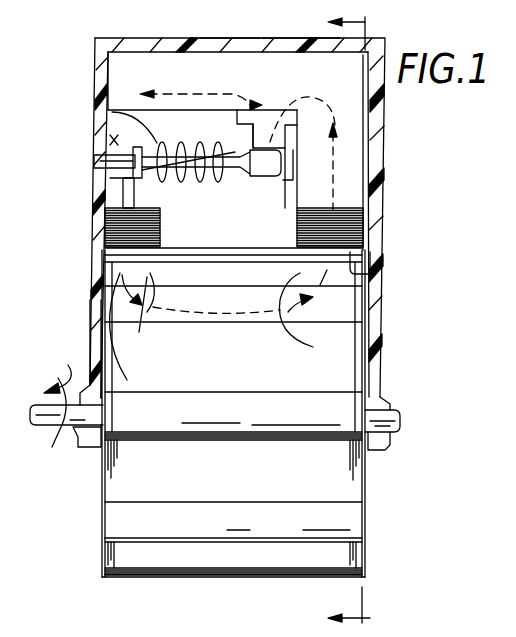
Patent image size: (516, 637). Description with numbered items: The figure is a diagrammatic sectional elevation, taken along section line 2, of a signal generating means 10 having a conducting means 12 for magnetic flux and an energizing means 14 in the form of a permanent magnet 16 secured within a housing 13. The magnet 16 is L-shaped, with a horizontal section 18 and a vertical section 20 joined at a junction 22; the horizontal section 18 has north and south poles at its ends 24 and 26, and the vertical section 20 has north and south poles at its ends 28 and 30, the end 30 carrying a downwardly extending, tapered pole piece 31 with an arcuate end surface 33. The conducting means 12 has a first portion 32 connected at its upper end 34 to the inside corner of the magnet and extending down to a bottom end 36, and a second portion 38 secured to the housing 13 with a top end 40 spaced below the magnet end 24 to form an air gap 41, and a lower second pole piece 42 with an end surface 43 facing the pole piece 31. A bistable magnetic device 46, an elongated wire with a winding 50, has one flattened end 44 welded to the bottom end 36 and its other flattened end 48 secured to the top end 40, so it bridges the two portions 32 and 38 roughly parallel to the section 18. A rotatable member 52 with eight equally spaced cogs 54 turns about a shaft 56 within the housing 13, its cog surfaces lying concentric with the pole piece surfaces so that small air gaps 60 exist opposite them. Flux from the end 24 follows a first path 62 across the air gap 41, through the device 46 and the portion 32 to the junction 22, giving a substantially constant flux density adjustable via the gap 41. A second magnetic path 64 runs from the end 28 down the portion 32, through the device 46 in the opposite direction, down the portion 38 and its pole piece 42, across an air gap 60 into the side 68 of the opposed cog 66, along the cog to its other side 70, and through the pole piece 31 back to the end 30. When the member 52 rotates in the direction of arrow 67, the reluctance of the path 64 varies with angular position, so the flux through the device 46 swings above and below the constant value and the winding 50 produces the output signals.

The section line 2- 2 is at (360, 322).
The signal generating means 10 is at (450, 143).
The conducting means 12 is at (160, 233).
The housing 13 is at (382, 328).
The energizing means 14 is at (357, 170).
The permanent magnet 16 is at (240, 63).
The horizontal section 18 is at (144, 73).
The vertical section 20 is at (357, 187).
The junction 22 is at (312, 108).
The north pole end 24 is at (113, 60).
The south pole end 26 is at (300, 28).
The north pole end 28 is at (348, 115).
The south pole end 30 is at (358, 203).
The pole piece 31 is at (372, 275).
The first portion 32 is at (255, 130).
The arcuate end surface 33 is at (334, 296).
The upper end 34 is at (172, 125).
The bottom end 36 is at (275, 182).
The second portion 38 is at (112, 210).
The top end 40 is at (110, 165).
The air gap 41 is at (115, 133).
The second pole piece 42 is at (100, 252).
The end surface 43 is at (92, 296).
The flattened end 44 is at (278, 166).
The bistable magnetic device 46 is at (203, 219).
The flattened end 48 is at (113, 190).
The winding 50 is at (118, 110).
The rotatable member 52 is at (347, 473).
The cogs 54 is at (347, 567).
The shaft 56 is at (74, 413).
The air gaps 60 is at (297, 256).
The first path 62 is at (228, 100).
The second magnetic path 64 is at (197, 313).
The cog 66 is at (137, 321).
The arrow 67 is at (52, 396).
The side 68 is at (136, 334).
The other side 70 is at (315, 318).